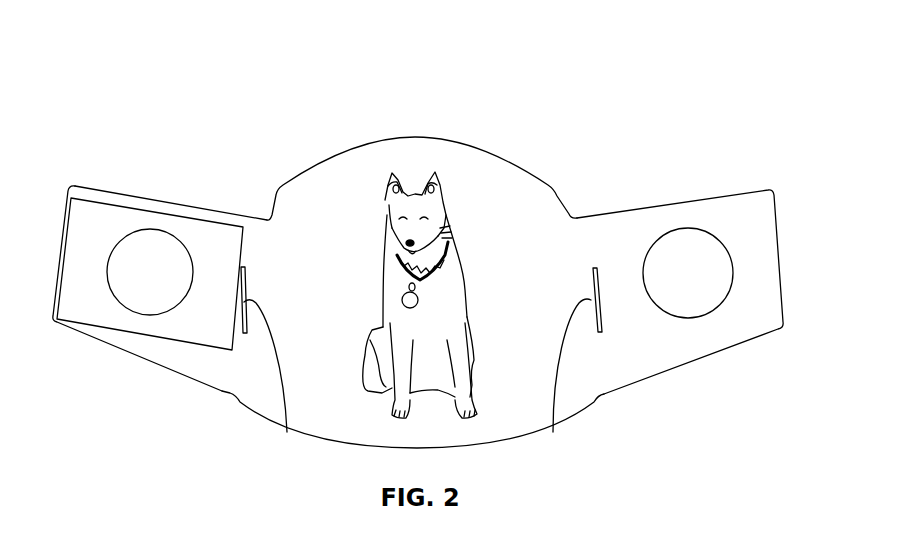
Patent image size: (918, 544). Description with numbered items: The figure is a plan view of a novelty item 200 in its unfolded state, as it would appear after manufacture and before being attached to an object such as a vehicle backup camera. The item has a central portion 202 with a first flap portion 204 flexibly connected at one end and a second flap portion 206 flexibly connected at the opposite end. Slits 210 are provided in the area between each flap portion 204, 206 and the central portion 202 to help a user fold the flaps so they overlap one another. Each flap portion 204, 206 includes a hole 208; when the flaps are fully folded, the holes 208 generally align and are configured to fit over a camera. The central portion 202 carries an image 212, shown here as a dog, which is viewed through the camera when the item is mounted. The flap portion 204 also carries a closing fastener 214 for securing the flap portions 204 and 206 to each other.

The novelty item 200 is at (153, 83).
The central portion 202 is at (517, 170).
The first flap portion 204 is at (157, 207).
The second flap portion 206 is at (747, 202).
The holes 208 is at (152, 305).
The slits 210 is at (287, 432).
The image 212 is at (413, 193).
The closing fastener 214 is at (78, 293).